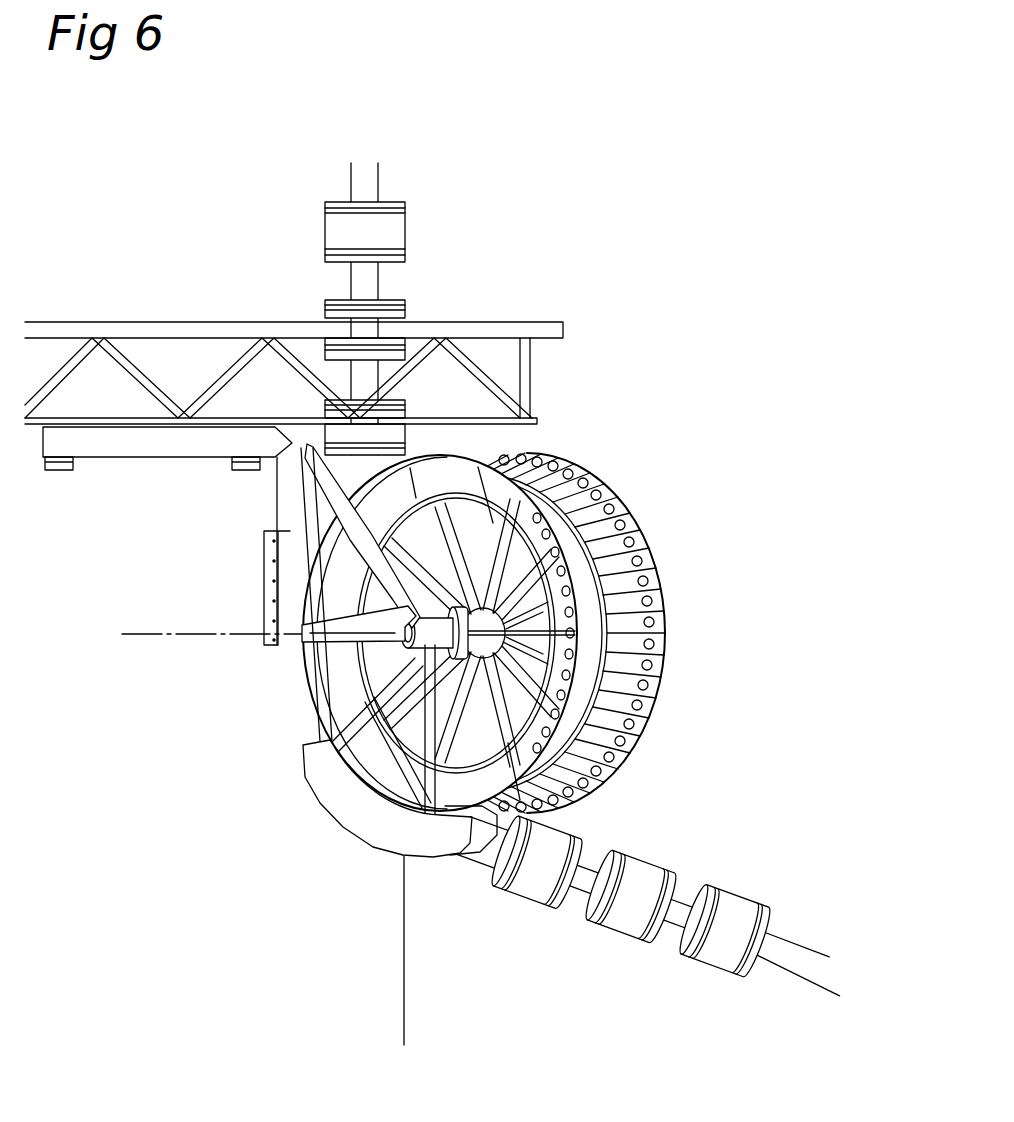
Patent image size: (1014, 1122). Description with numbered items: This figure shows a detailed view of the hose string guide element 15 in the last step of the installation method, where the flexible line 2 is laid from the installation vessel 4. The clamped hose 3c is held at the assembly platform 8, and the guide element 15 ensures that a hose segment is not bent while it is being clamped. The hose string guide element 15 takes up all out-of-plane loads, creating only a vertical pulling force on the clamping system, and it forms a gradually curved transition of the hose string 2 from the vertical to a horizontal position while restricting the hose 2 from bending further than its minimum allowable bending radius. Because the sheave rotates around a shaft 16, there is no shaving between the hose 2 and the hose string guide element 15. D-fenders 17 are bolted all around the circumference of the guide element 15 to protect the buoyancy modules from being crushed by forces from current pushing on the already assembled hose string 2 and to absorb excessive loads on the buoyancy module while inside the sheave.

The assembly platform 8 is at (546, 331).
The clamped hose 3c is at (358, 476).
The shaft 16 is at (175, 633).
The hose string guide element 15 is at (602, 633).
The D-fenders 17 is at (637, 735).
The flexible line 2 is at (710, 869).
The installation vessel 4 is at (416, 996).